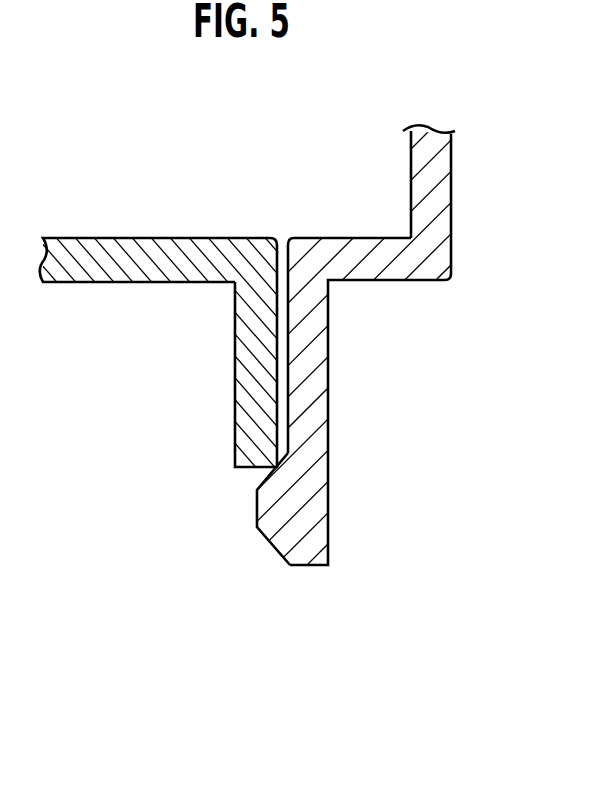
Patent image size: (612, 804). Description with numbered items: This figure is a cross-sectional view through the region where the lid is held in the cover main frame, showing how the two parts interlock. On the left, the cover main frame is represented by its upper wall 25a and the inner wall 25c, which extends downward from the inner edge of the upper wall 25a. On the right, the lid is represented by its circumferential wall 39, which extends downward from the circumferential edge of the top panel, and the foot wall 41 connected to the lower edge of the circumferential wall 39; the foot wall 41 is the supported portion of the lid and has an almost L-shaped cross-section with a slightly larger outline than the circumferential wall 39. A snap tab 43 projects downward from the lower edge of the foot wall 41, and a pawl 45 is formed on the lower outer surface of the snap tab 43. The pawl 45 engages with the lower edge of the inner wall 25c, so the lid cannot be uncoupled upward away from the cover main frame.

The upper wall 25a is at (170, 255).
The inner wall 25c is at (235, 363).
The circumferential wall 39 is at (420, 190).
The foot wall 41 is at (312, 354).
The snap tab 43 is at (312, 473).
The pawl 45 is at (277, 517).